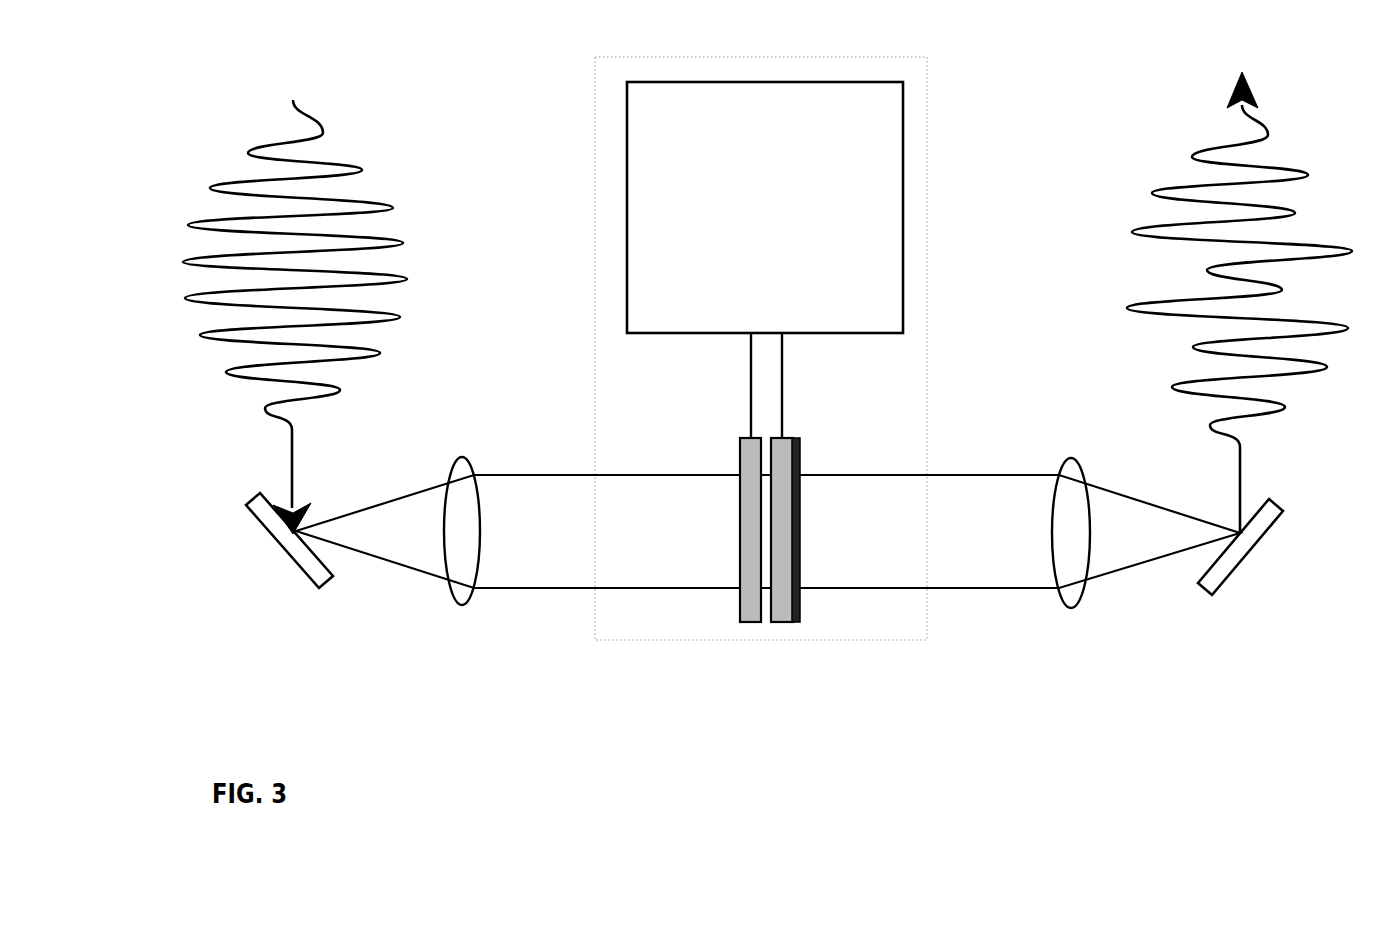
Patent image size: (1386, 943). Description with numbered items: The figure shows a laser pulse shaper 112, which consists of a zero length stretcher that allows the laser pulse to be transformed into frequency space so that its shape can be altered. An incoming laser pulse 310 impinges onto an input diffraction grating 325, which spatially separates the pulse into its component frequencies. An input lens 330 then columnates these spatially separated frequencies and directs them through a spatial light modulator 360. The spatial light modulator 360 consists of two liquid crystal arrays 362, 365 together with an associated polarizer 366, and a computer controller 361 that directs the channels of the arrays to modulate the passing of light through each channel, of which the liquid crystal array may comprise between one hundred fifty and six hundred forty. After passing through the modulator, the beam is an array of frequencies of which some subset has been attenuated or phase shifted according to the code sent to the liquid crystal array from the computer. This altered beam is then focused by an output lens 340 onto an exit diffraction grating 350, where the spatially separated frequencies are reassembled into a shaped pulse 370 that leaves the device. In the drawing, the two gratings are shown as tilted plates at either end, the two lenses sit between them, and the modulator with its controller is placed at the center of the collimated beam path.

The laser pulse shaper 112 is at (768, 642).
The laser pulse 310 is at (308, 317).
The input diffraction grating 325 is at (276, 540).
The input lens 330 is at (461, 554).
The output lens 340 is at (1075, 562).
The exit diffraction grating 350 is at (1247, 547).
The spatial light modulator 360 is at (761, 339).
The computer controller 361 is at (765, 207).
The liquid crystal array 362 is at (747, 437).
The liquid crystal array 365 is at (788, 437).
The polarizer 366 is at (802, 450).
The shaped pulse 370 is at (1215, 302).